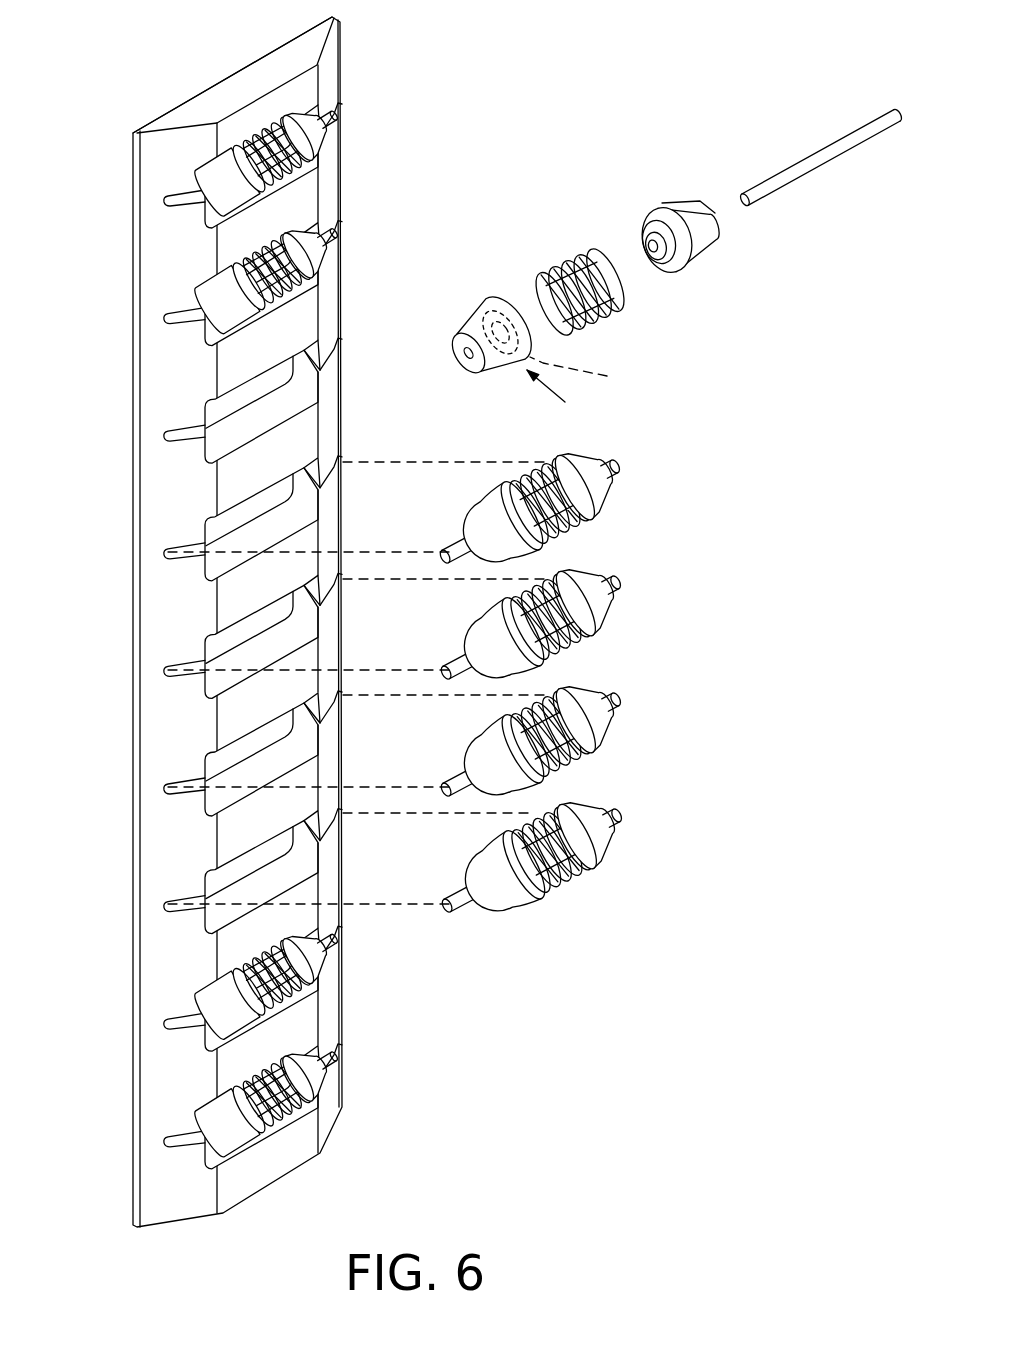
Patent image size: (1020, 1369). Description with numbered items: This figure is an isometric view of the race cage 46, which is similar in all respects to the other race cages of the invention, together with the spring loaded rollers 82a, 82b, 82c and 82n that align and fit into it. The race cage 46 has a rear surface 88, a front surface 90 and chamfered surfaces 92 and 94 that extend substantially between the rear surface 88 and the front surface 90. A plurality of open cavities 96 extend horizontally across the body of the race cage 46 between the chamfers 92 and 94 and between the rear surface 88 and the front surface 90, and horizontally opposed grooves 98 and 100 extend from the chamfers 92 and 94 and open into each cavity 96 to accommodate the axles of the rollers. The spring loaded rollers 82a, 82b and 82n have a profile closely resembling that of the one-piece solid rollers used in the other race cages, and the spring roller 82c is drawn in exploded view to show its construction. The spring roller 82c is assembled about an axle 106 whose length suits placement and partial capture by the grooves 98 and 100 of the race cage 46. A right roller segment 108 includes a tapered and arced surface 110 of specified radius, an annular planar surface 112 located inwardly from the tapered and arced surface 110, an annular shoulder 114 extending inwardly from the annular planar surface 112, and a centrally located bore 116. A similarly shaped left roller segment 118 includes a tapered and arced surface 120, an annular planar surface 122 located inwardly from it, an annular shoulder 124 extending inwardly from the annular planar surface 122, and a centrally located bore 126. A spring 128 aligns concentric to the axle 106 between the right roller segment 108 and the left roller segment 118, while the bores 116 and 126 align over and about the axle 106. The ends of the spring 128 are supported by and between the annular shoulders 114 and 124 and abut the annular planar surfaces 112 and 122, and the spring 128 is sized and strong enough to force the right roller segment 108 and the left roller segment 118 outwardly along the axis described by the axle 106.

The race cage 46 is at (160, 104).
The spring loaded roller 82a is at (307, 147).
The spring loaded roller 82b is at (298, 277).
The spring roller 82c is at (685, 135).
The spring loaded roller 82n is at (313, 1083).
The rear surface 88 is at (283, 45).
The front surface 90 is at (262, 115).
The chamfered surface 92 is at (162, 179).
The chamfered surface 94 is at (330, 76).
The open cavity 96 is at (222, 412).
The groove 98 is at (165, 445).
The groove 100 is at (318, 345).
The axle 106 is at (777, 193).
The right roller segment 108 is at (717, 255).
The tapered and arced surface 110 is at (675, 203).
The annular planar surface 112 is at (677, 265).
The annular shoulder 114 is at (660, 260).
The bore 116 is at (652, 246).
The left roller segment 118 is at (571, 395).
The tapered and arced surface 120 is at (502, 377).
The annular planar surface 122 is at (593, 374).
The annular shoulder 124 is at (505, 300).
The bore 126 is at (465, 355).
The spring 128 is at (603, 323).